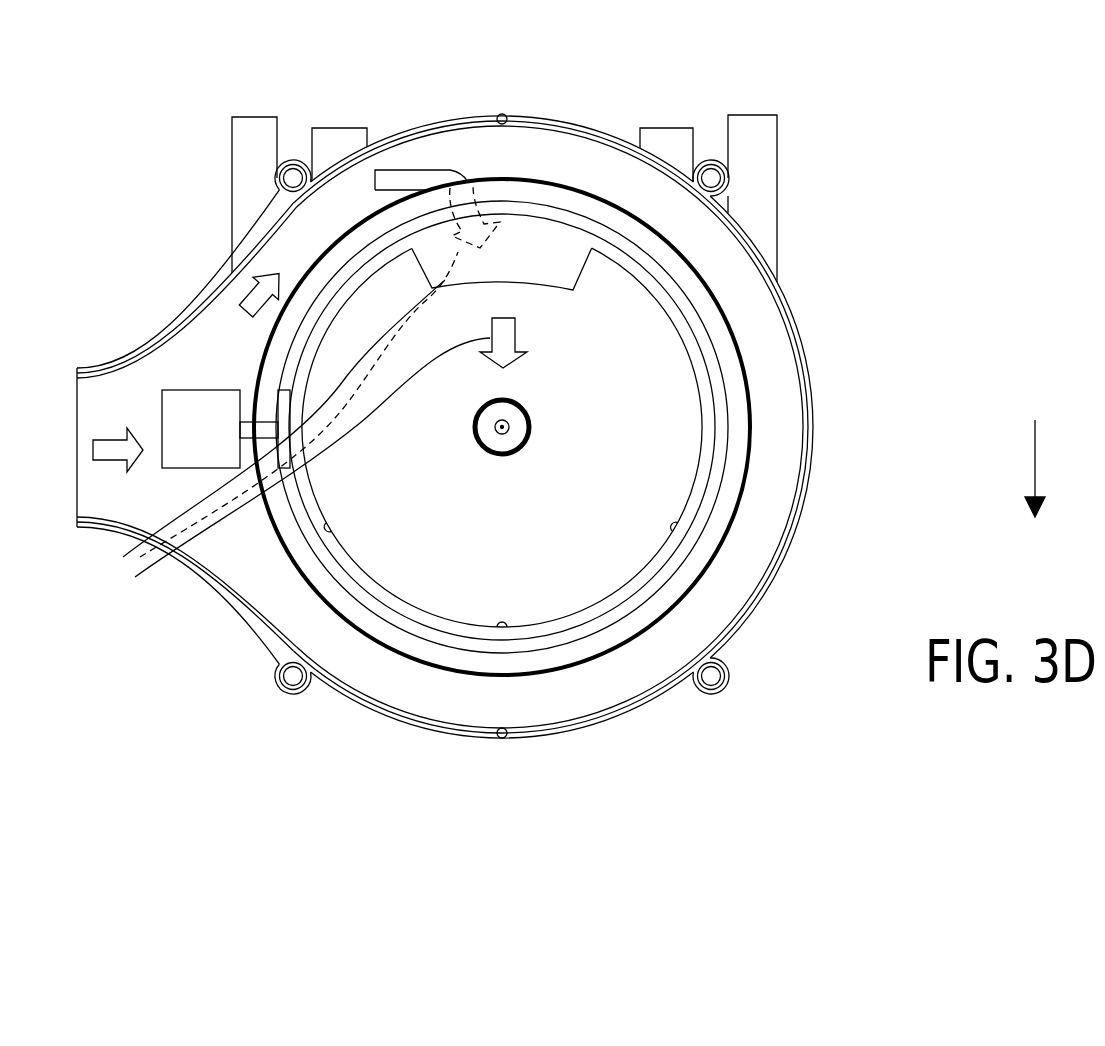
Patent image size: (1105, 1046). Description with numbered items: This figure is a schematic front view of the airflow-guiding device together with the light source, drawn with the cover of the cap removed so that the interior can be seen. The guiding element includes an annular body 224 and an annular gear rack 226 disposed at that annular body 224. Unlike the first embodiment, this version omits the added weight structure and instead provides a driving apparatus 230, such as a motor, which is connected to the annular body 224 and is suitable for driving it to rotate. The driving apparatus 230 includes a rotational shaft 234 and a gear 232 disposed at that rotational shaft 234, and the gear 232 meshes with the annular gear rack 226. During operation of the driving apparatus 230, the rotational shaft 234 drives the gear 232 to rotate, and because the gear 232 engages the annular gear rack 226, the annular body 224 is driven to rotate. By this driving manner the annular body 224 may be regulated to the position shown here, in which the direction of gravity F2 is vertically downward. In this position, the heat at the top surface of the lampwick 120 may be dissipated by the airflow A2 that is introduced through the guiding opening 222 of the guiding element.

The lampwick 120 is at (488, 450).
The guiding opening 222 is at (531, 205).
The annular body 224 is at (637, 232).
The annular gear rack 226 is at (710, 346).
The driving apparatus 230 is at (170, 412).
The gear 232 is at (262, 424).
The rotational shaft 234 is at (278, 420).
The airflow A2 is at (115, 460).
The gravity F2 is at (1037, 464).